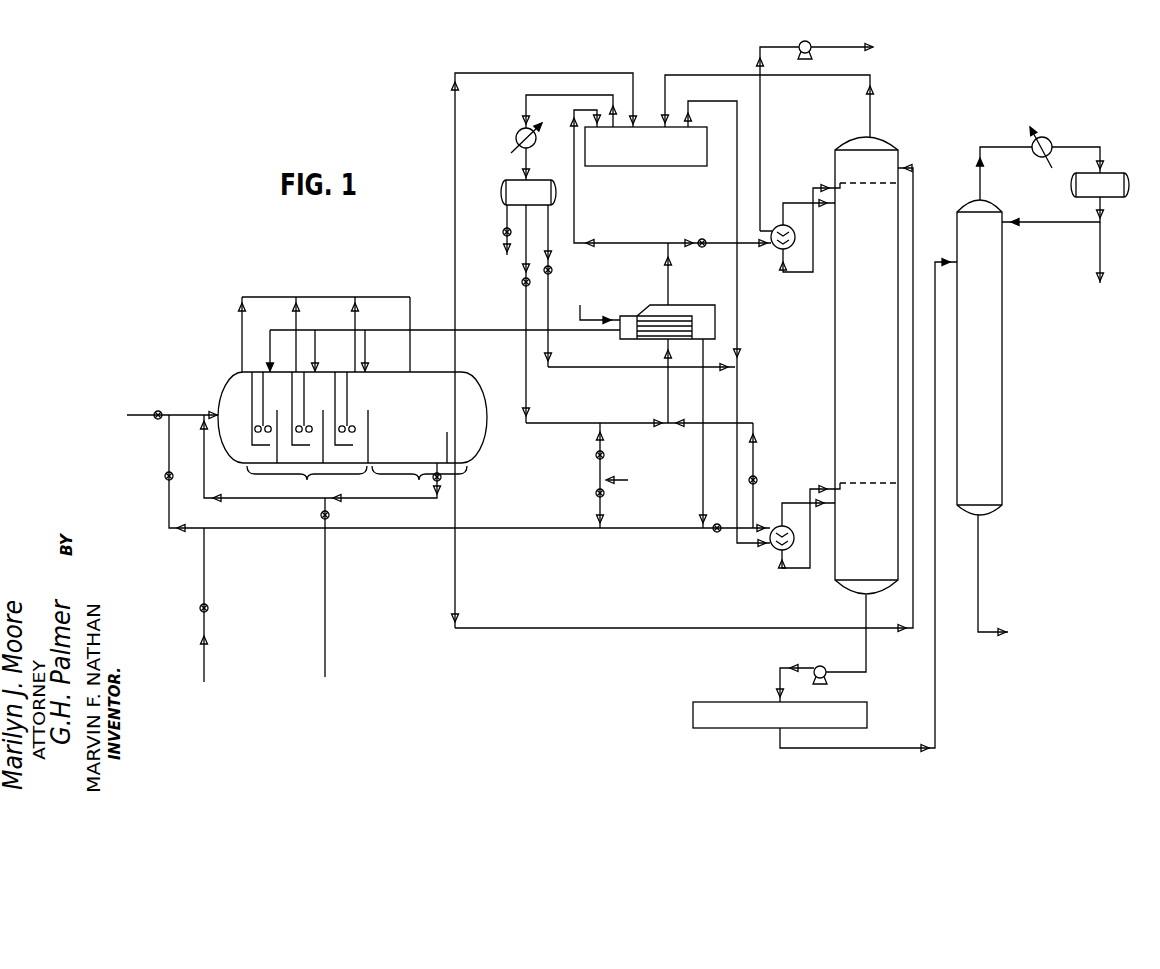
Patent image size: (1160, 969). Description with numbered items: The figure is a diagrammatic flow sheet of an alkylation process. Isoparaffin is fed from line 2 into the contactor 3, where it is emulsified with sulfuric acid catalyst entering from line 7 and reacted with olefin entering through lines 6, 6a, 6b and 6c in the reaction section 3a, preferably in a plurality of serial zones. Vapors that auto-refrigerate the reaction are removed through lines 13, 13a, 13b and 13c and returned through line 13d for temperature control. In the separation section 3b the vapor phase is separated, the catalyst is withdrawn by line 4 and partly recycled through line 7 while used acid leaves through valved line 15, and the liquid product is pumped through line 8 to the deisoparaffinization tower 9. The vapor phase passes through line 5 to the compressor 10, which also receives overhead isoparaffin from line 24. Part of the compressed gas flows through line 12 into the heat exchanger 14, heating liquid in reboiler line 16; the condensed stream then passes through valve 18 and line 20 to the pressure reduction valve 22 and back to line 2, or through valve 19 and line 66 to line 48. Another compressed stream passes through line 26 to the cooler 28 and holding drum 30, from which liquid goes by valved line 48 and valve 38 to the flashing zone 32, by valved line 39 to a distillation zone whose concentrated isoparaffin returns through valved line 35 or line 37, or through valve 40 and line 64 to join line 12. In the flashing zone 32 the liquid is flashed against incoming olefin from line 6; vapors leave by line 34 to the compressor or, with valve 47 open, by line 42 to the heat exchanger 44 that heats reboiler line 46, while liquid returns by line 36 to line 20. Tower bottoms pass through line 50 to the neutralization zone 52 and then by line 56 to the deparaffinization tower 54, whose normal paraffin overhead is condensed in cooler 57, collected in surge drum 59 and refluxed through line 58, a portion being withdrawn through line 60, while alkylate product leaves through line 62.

The isoparaffin feed line 2 is at (152, 414).
The contactor 3 is at (222, 395).
The reaction section 3a is at (308, 479).
The separation section 3b is at (418, 479).
The catalyst withdrawal line 4 is at (354, 503).
The vapor line 5 is at (484, 73).
The olefin feed line 6 is at (474, 334).
The olefin inlet line 6a is at (270, 348).
The olefin inlet line 6b is at (320, 344).
The olefin inlet line 6c is at (370, 344).
The catalyst line 7 is at (201, 641).
The liquid product line 8 is at (455, 592).
The deisoparaffinization tower 9 is at (835, 349).
The compressor 10 is at (660, 166).
The compressed gas line 12 is at (727, 101).
The vapor removal line 13 is at (324, 296).
The vapor removal line 13a is at (242, 306).
The vapor removal line 13b is at (296, 306).
The vapor removal line 13c is at (355, 306).
The vapor return line 13d is at (410, 311).
The heat exchanger (reboiler) 14 is at (779, 550).
The spent acid line 15 is at (325, 590).
The reboiler line 16 is at (791, 502).
The valve 18 is at (714, 535).
The valve 19 is at (757, 482).
The recycle line 20 is at (168, 432).
The pressure reduction valve 22 is at (165, 477).
The overhead line 24 is at (831, 75).
The compressor discharge line 26 is at (525, 98).
The cooler 28 is at (516, 139).
The holding drum 30 is at (506, 182).
The flashing zone 32 is at (703, 306).
The vapor recycle line 34 is at (668, 258).
The valved return line 35 is at (598, 469).
The liquid recycle line 36 is at (700, 491).
The return line 37 is at (603, 500).
The valve 38 is at (521, 283).
The valved line 39 is at (505, 238).
The valve 40 is at (553, 271).
The vapor line 42 is at (846, 47).
The heat exchanger 44 is at (777, 250).
The reboiler line 46 is at (797, 203).
The valve 47 is at (700, 240).
The valved line 48 is at (666, 398).
The bottoms line 50 is at (864, 648).
The neutralization zone 52 is at (741, 729).
The deparaffinization tower 54 is at (1003, 358).
The neutralized product line 56 is at (937, 680).
The cooler 57 is at (1048, 141).
The reflux line 58 is at (984, 167).
The surge drum 59 is at (1107, 177).
The normal paraffin withdrawal line 60 is at (1100, 270).
The alkylate product line 62 is at (978, 568).
The liquid transfer line 64 is at (609, 367).
The transfer line 66 is at (750, 421).